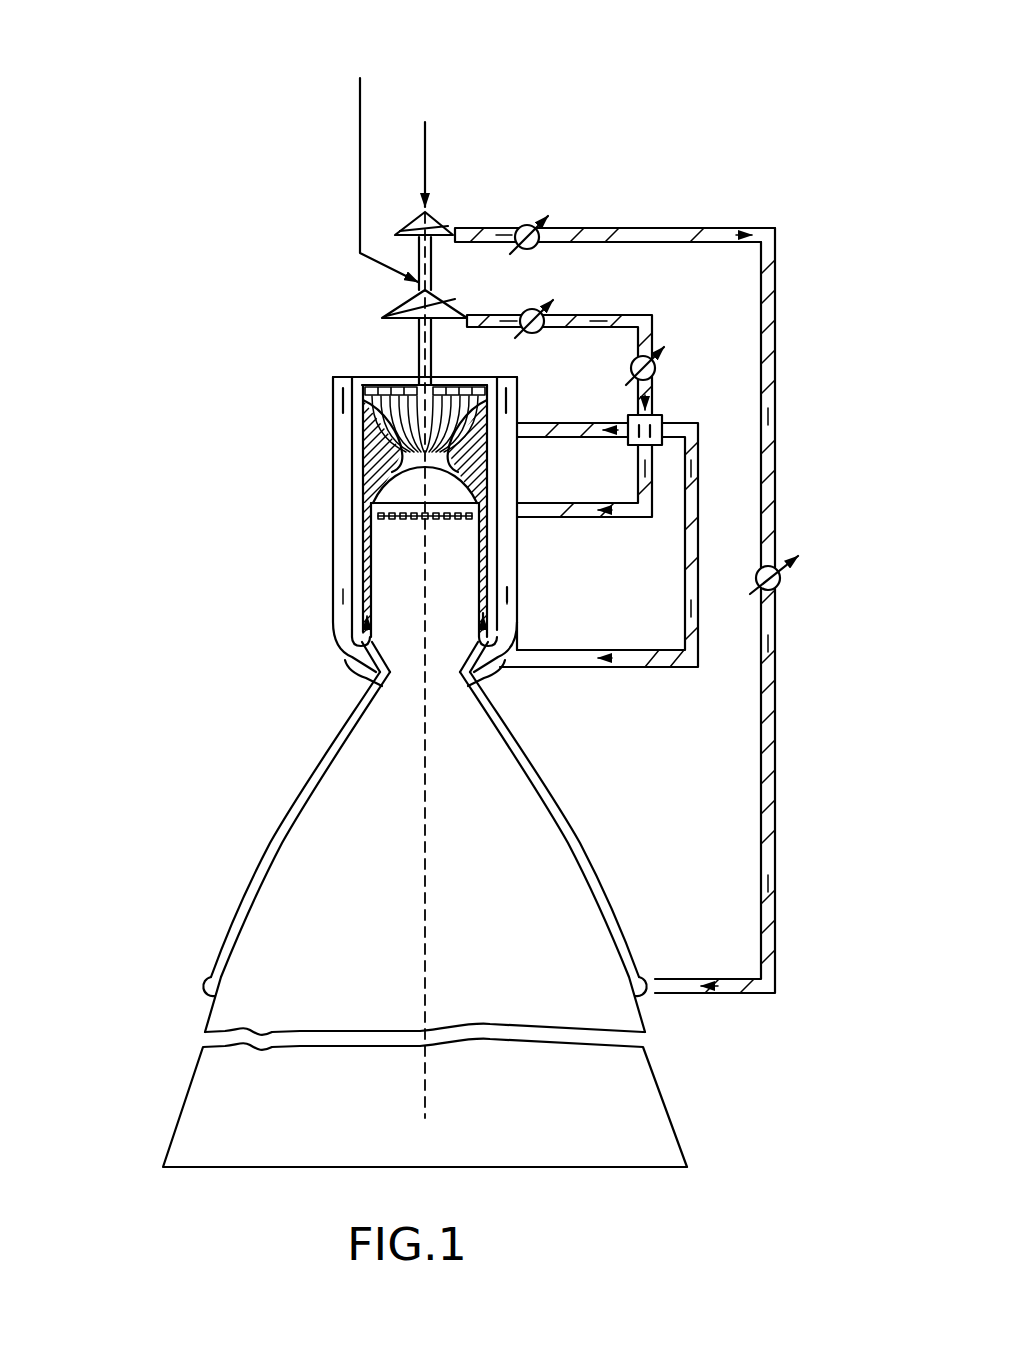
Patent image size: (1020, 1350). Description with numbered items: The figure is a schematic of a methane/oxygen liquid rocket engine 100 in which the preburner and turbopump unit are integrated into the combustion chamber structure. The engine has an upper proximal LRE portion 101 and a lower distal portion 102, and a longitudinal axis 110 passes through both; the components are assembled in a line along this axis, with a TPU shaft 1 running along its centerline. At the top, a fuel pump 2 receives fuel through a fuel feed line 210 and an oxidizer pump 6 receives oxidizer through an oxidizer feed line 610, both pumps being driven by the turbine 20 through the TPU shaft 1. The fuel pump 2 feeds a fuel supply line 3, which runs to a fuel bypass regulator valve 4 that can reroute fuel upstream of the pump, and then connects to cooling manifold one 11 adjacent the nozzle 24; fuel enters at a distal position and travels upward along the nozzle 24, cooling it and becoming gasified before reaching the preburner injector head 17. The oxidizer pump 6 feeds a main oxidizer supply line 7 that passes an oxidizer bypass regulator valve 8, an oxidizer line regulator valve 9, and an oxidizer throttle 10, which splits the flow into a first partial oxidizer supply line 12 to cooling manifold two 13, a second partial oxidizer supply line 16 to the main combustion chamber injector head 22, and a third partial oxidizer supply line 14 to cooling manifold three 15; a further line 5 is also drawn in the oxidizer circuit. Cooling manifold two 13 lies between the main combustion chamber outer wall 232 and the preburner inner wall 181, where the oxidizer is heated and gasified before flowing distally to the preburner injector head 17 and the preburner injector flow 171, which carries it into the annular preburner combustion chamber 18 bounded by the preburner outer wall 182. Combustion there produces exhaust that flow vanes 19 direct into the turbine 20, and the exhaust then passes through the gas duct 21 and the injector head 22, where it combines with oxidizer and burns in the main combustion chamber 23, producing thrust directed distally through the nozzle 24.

The liquid rocket engine 100 is at (156, 87).
The longitudinal axis 110 is at (425, 1118).
The oxidizer feed line 610 is at (360, 102).
The fuel feed line 210 is at (425, 128).
The fuel pump 2 is at (446, 213).
The oxidizer pump 6 is at (402, 300).
The TPU shaft 1 is at (417, 340).
The fuel supply line 3 is at (720, 228).
The fuel bypass regulator valve 4 is at (531, 228).
The oxidizer feed pipe with pump 5 is at (790, 577).
The main oxidizer supply line 7 is at (622, 315).
The oxidizer bypass regulator valve 8 is at (535, 312).
The oxidizer line regulator valve 9 is at (655, 366).
The oxidizer throttle 10 is at (670, 410).
The first partial oxidizer supply line 12 is at (538, 405).
The second partial oxidizer supply line 16 is at (625, 522).
The third partial oxidizer supply line 14 is at (655, 672).
The preburner injector head 17 is at (518, 627).
The proximal LRE portion 101 is at (320, 330).
The flow vanes 19 is at (340, 390).
The cooling manifold two 13 is at (497, 586).
The turbine 20 is at (440, 385).
The preburner combustion chamber 18 is at (335, 446).
The gas duct 21 is at (420, 445).
The main combustion chamber injector head 22 is at (455, 530).
The preburner outer wall 182 is at (335, 488).
The preburner inner wall 181 is at (352, 513).
The main combustion chamber outer wall 232 is at (370, 553).
The preburner injector flow 171 is at (340, 615).
The distal LRE portion 102 is at (295, 627).
The cooling manifold three 15 is at (340, 660).
The main combustion chamber 23 is at (445, 655).
The cooling manifold one 11 is at (262, 840).
The nozzle 24 is at (190, 1080).